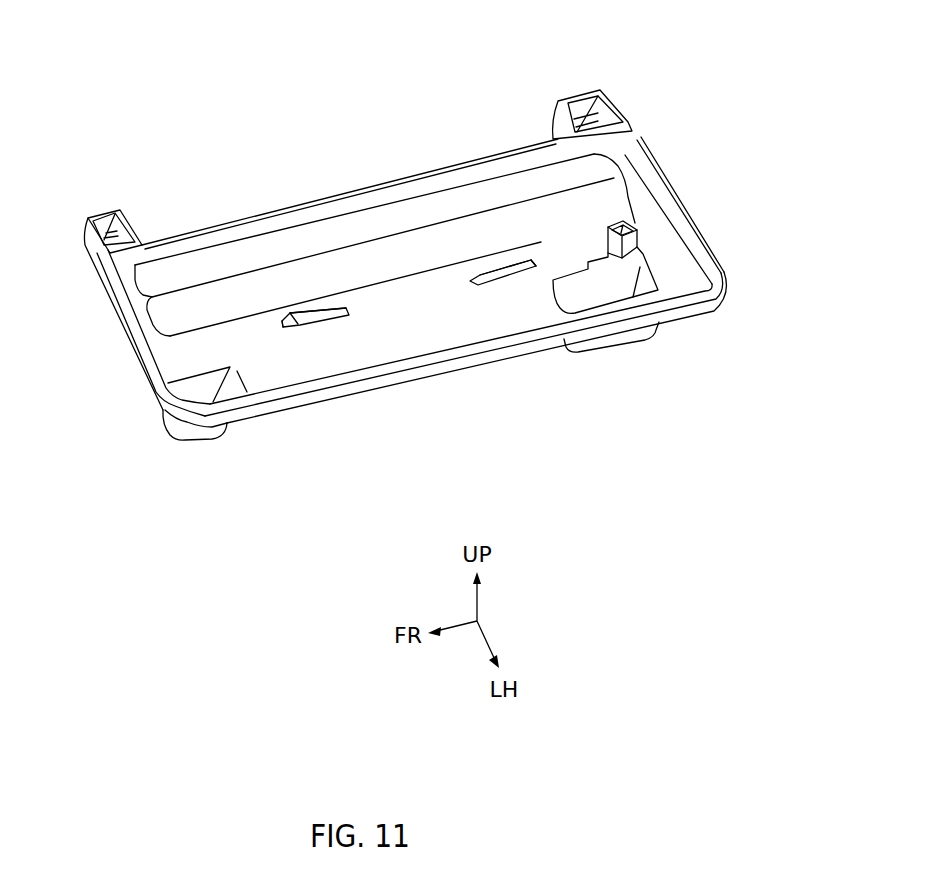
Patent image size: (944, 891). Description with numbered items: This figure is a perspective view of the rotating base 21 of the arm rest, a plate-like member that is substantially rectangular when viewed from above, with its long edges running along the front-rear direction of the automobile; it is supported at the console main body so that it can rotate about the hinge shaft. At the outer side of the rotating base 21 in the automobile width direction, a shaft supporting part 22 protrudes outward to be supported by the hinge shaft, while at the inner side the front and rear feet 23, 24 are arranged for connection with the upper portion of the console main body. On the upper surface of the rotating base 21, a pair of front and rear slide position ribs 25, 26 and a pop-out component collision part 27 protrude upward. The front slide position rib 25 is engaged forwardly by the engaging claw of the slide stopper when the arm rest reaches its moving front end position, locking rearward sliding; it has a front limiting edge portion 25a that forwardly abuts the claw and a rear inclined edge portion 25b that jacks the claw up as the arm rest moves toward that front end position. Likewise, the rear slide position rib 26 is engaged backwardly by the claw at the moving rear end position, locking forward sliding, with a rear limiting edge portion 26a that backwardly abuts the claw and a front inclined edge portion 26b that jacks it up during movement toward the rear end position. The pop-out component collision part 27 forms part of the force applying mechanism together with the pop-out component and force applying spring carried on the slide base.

The rotating base 21 is at (366, 186).
The shaft supporting part 22 is at (101, 213).
The front foot 23 is at (194, 436).
The rear foot 24 is at (621, 342).
The front slide position rib 25 is at (300, 327).
The front limiting edge portion 25a is at (280, 323).
The rear inclined edge portion 25b is at (324, 310).
The rear slide position rib 26 is at (520, 272).
The rear limiting edge portion 26a is at (531, 262).
The front inclined edge portion 26b is at (488, 274).
The pop-out component collision part 27 is at (636, 228).